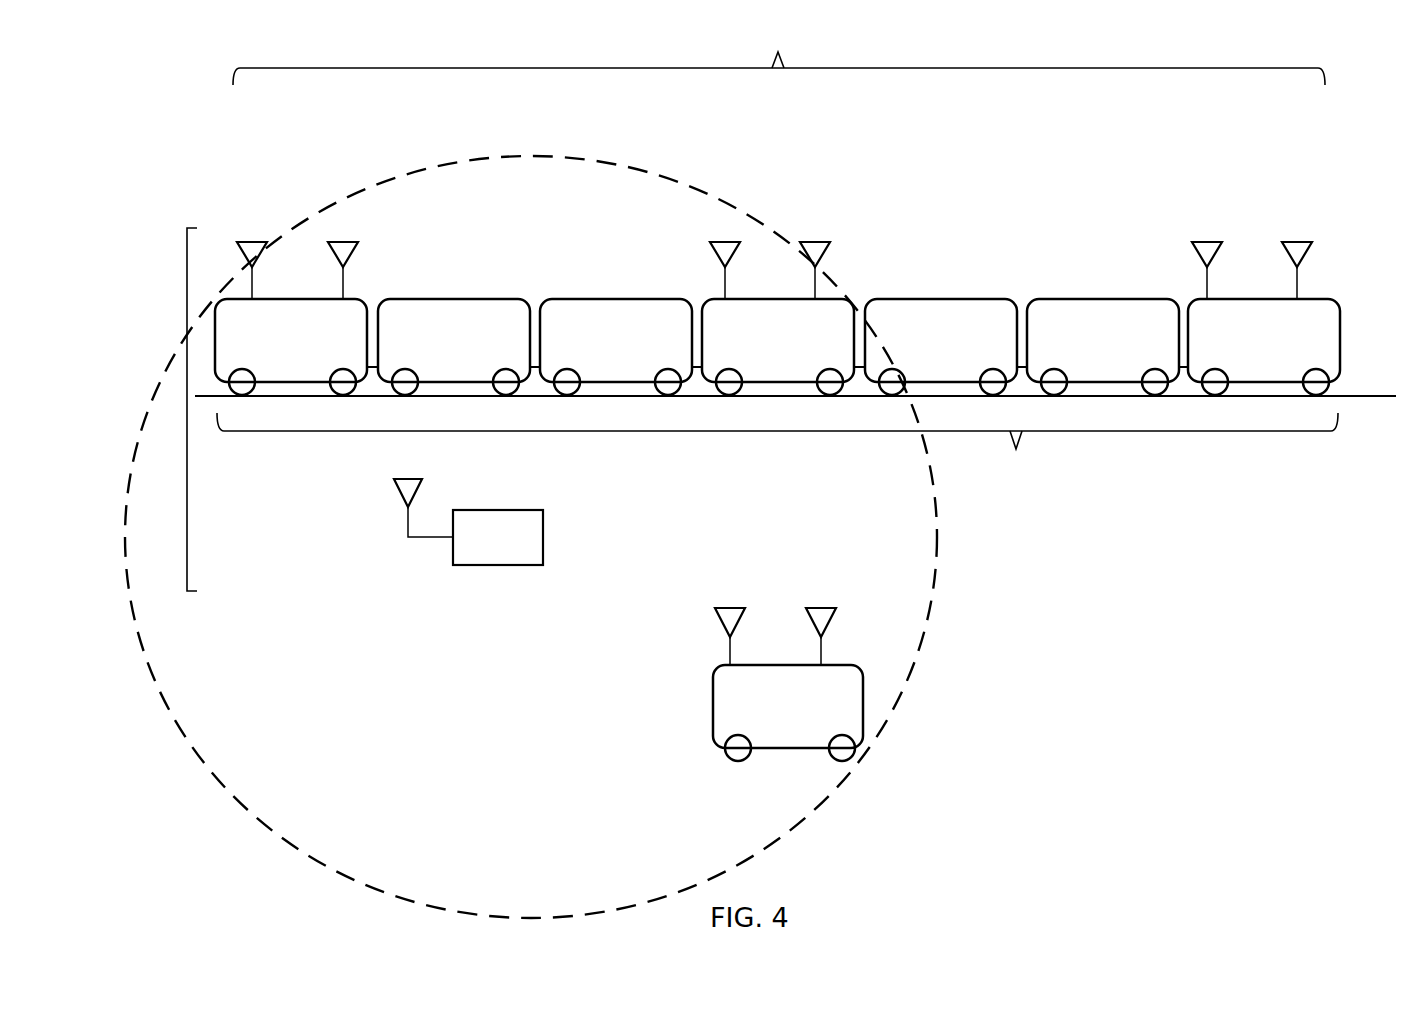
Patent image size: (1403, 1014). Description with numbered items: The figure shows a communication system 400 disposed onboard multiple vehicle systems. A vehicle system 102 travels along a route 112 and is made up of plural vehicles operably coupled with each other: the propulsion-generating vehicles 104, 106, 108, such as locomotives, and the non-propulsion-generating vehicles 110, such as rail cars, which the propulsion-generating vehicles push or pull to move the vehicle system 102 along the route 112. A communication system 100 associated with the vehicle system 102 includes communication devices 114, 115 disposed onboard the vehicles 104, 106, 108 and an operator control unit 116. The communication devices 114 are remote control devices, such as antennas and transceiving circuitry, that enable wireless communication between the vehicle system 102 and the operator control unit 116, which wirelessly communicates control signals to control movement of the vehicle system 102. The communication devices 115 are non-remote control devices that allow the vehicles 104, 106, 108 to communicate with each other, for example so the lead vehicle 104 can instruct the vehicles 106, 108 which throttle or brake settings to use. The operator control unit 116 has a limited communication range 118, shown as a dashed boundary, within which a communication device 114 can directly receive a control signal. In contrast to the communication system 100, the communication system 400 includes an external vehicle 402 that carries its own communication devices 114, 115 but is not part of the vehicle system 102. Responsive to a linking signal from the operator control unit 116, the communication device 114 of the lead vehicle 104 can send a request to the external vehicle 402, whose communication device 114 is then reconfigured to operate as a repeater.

The communication system 400 is at (779, 47).
The communication range 118 is at (531, 173).
The communication system 100 is at (187, 371).
The vehicle system 102 is at (777, 456).
The vehicle 104 is at (367, 299).
The vehicle 106 is at (846, 299).
The vehicle 108 is at (1330, 299).
The vehicle 110 is at (462, 299).
The route 112 is at (1376, 398).
The communication device 114 is at (257, 252).
The communication device 115 is at (347, 242).
The operator control unit 116 is at (513, 508).
The external vehicle 402 is at (855, 665).